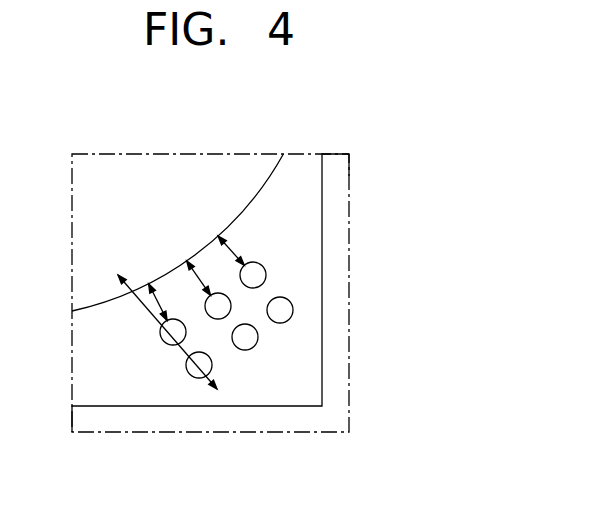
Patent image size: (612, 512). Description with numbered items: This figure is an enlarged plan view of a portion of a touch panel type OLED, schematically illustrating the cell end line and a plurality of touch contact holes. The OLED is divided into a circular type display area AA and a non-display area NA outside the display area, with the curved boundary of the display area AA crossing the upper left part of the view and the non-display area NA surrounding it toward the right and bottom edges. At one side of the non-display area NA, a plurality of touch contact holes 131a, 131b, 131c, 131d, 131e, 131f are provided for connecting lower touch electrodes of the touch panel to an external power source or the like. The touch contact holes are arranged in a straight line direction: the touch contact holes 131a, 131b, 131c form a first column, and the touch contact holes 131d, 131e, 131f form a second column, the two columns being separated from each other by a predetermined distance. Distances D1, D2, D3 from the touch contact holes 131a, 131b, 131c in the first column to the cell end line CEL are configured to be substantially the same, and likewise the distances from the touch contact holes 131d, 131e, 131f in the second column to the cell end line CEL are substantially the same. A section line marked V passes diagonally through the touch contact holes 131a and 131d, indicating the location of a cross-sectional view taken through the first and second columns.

The touch contact hole 131a is at (170, 345).
The touch contact hole 131b is at (219, 319).
The touch contact hole 131c is at (254, 288).
The touch contact hole 131d is at (197, 378).
The touch contact hole 131e is at (244, 350).
The touch contact hole 131f is at (281, 323).
The display area AA is at (234, 170).
The non-display area NA is at (308, 214).
The cell end line CEL is at (296, 181).
The distance D1 is at (167, 302).
The distance D2 is at (207, 278).
The distance D3 is at (240, 250).
The section line V- V is at (161, 341).